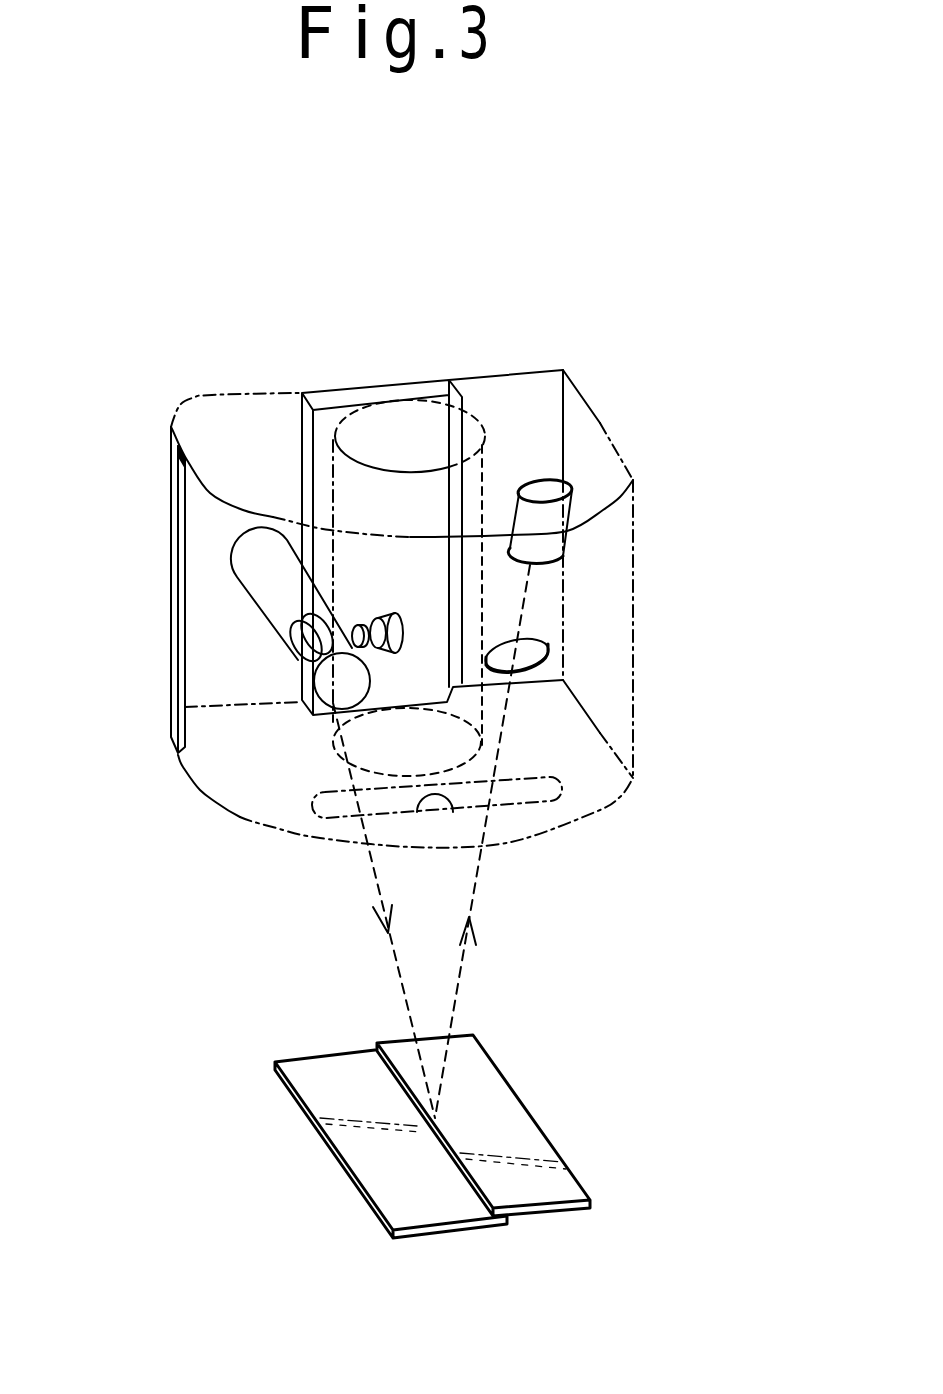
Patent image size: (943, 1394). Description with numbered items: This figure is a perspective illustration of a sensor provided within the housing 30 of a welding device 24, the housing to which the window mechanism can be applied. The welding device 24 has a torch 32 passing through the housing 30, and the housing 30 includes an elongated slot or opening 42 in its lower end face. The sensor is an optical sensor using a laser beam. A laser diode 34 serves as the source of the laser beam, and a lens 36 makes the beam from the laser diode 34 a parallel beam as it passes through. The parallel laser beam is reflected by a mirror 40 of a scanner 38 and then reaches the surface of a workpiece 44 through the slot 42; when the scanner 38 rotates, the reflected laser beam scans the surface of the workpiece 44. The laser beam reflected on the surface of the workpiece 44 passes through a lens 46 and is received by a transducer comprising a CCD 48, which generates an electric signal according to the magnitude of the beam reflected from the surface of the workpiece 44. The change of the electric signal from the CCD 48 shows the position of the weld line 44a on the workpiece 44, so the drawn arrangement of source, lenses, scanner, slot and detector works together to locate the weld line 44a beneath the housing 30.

The welding device 24 is at (210, 314).
The housing 30 is at (173, 430).
The torch 32 is at (400, 402).
The laser diode 34 is at (400, 617).
The lens 36 is at (367, 623).
The scanner 38 is at (235, 577).
The mirror 40 is at (293, 627).
The slot 42 is at (453, 812).
The workpiece 44 is at (302, 1105).
The weld line 44a is at (467, 1187).
The lens 46 is at (553, 653).
The CCD 48 is at (570, 492).